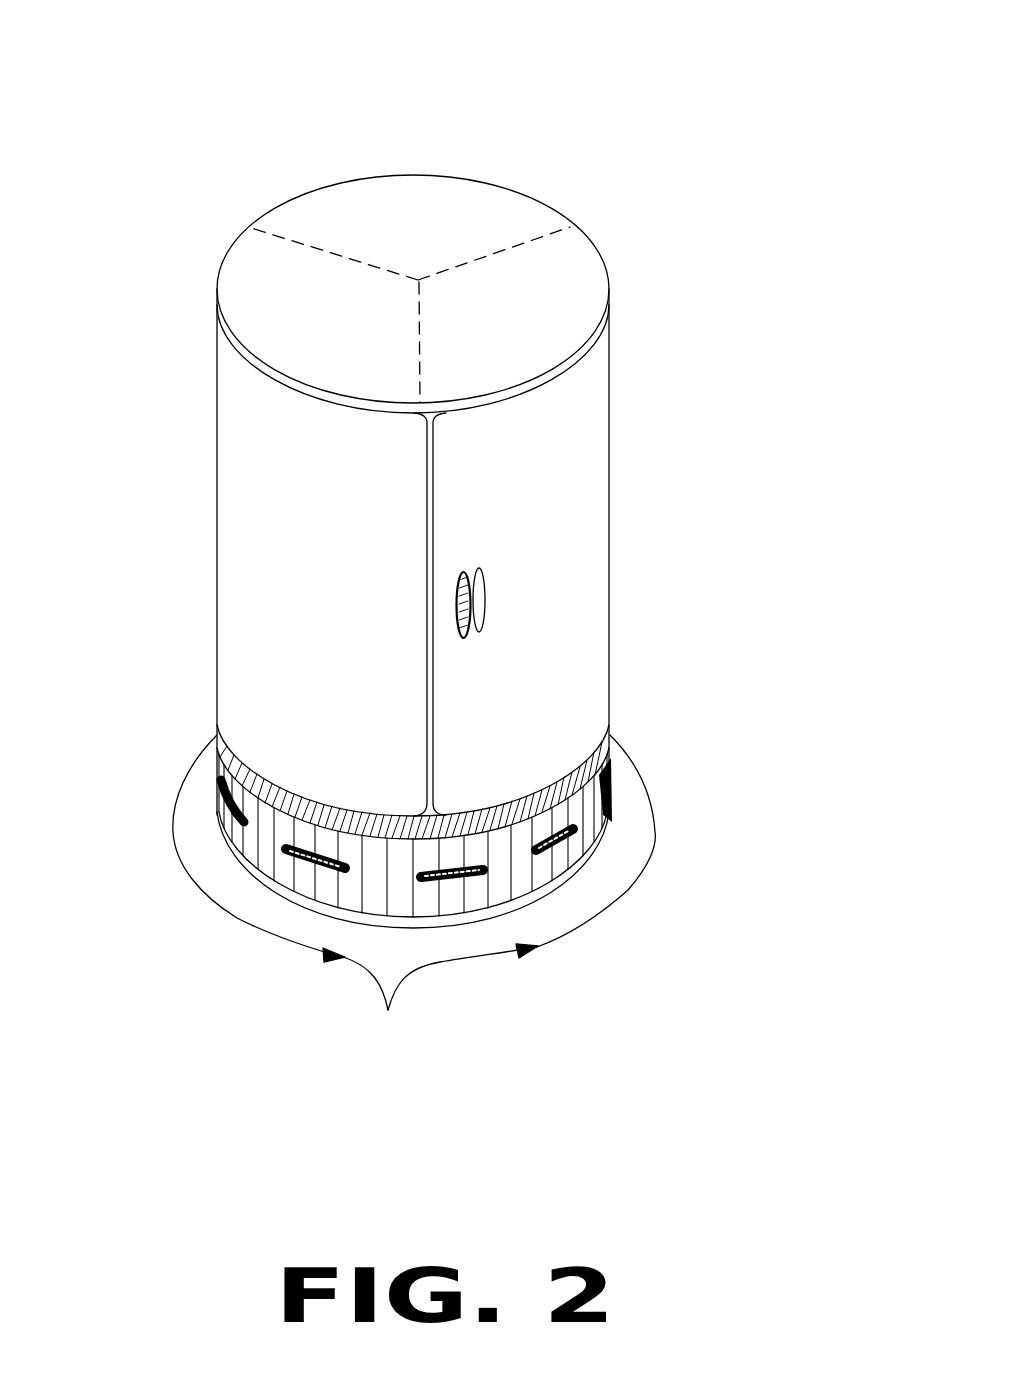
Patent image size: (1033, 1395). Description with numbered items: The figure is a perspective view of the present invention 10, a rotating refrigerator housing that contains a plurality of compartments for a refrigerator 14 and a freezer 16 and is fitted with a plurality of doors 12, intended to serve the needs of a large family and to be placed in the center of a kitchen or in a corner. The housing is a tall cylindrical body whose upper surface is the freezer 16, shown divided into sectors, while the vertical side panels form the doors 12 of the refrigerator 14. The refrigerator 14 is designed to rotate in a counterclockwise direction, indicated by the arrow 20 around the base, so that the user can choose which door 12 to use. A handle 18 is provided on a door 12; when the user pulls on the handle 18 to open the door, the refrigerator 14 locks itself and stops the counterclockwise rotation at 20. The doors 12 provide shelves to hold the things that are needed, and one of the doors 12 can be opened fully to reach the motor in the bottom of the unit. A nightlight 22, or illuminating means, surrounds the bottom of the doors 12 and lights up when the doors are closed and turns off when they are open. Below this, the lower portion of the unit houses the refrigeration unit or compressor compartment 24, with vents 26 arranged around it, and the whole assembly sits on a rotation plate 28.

The present invention 10 is at (677, 298).
The doors 12 is at (587, 490).
The refrigerator 14 is at (273, 293).
The freezer 16 is at (408, 200).
The handle 18 is at (473, 613).
The arrow 20 is at (424, 873).
The nightlight 22 is at (573, 786).
The compressor compartment 24 is at (218, 815).
The vents 26 is at (300, 860).
The rotation plate 28 is at (563, 887).